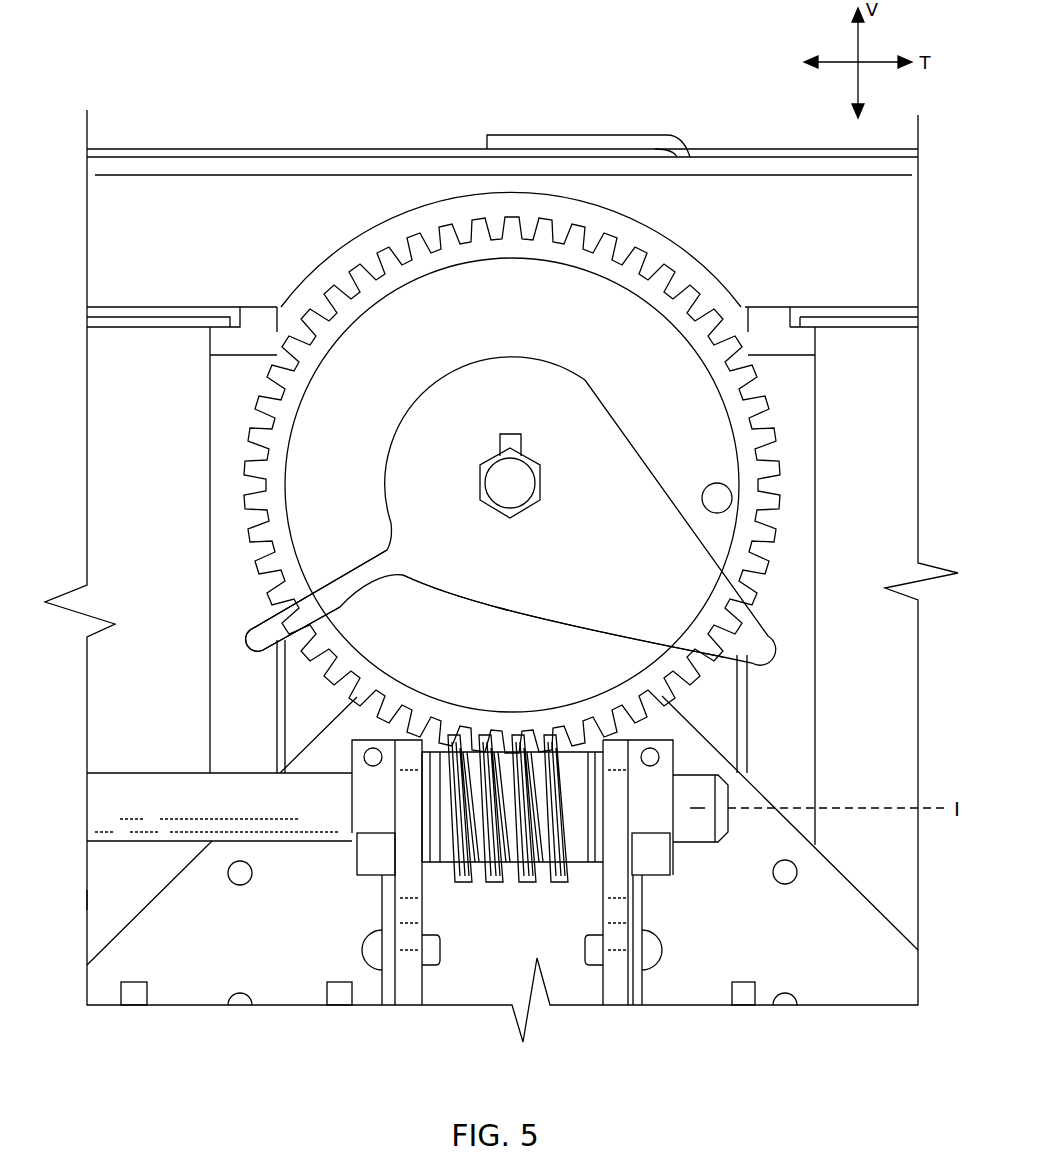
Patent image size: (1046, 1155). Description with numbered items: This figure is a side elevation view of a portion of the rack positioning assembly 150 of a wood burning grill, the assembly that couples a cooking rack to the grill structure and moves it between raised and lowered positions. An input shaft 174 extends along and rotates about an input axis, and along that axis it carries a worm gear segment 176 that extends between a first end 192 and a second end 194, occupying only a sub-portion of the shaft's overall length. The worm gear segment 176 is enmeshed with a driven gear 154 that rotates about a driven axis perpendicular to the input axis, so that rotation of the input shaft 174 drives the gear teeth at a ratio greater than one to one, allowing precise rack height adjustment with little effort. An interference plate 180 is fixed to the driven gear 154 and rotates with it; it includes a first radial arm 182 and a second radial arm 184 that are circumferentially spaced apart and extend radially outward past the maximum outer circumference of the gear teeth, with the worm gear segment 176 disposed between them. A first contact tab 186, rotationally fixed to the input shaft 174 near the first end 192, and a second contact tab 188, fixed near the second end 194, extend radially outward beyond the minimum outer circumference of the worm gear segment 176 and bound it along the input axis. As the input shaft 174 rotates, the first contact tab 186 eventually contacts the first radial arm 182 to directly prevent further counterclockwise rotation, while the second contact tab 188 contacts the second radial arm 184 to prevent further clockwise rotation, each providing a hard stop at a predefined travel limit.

The rack positioning assembly 150 is at (87, 900).
The driven gear 154 is at (410, 300).
The input shaft 174 is at (100, 790).
The worm gear segment 176 is at (525, 876).
The interference plate 180 is at (511, 372).
The first radial arm 182 is at (612, 615).
The second radial arm 184 is at (335, 594).
The first contact tab 186 is at (650, 877).
The second contact tab 188 is at (357, 860).
The first end 192 is at (600, 828).
The second end 194 is at (415, 838).